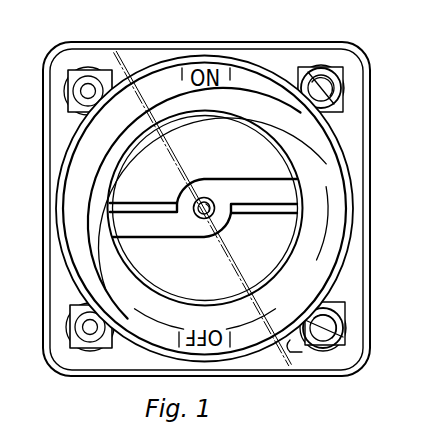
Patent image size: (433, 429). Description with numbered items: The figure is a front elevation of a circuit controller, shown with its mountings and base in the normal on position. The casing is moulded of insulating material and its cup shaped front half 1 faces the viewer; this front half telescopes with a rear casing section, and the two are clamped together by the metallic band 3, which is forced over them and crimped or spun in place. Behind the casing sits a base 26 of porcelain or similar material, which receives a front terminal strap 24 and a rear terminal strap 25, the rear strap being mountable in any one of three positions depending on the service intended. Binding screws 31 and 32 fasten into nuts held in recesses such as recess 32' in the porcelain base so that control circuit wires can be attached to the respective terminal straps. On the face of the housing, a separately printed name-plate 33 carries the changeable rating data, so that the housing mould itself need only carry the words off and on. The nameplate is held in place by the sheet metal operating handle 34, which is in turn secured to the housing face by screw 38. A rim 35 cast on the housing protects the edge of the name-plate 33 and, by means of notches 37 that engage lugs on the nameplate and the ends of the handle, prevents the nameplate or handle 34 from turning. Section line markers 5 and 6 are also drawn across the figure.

The cup shaped front half 1 is at (309, 127).
The metallic band 3 is at (352, 210).
The section line 5 is at (128, 55).
The section line 6 is at (115, 67).
The front support-conductor or terminal strap 24 is at (333, 303).
The rear support-conductor or terminal strap 25 is at (316, 63).
The base 26 is at (351, 354).
The binding screw 31 is at (328, 346).
The binding screw 32 is at (353, 86).
The recess 32' is at (60, 209).
The name-plate 33 is at (254, 133).
The operating handle 34 is at (290, 208).
The rim 35 is at (125, 163).
The notches 37 is at (109, 230).
The screw 38 is at (211, 203).